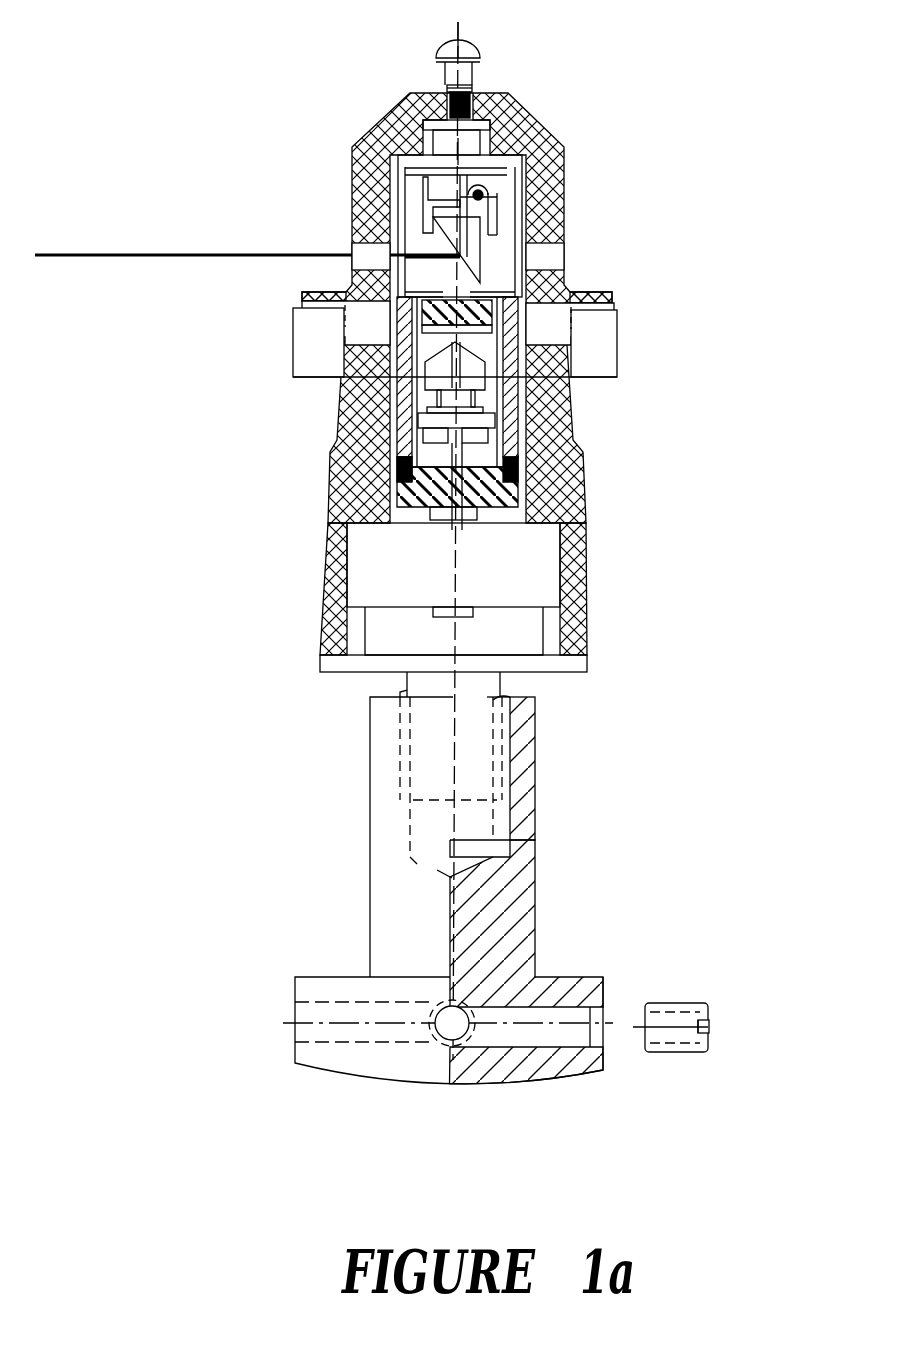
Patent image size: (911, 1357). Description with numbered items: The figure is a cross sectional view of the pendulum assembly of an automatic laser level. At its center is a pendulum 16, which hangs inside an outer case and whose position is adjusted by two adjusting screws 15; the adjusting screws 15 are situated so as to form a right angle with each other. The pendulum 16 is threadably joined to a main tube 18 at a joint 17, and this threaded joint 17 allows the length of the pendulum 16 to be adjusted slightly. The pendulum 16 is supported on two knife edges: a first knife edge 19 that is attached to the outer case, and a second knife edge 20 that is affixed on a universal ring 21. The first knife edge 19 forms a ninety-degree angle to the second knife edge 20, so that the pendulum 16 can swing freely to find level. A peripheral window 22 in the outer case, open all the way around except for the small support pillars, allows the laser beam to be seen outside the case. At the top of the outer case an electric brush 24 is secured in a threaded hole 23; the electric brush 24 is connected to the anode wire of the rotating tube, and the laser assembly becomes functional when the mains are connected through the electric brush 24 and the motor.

The adjusting screw 15 is at (672, 1025).
The pendulum 16 is at (515, 872).
The joint 17 is at (493, 697).
The main tube 18 is at (587, 588).
The first knife edge 19 is at (462, 373).
The second knife edge 20 is at (598, 322).
The universal ring 21 is at (613, 308).
The peripheral window 22 is at (560, 255).
The threaded hole 23 is at (500, 97).
The electric brush 24 is at (447, 82).